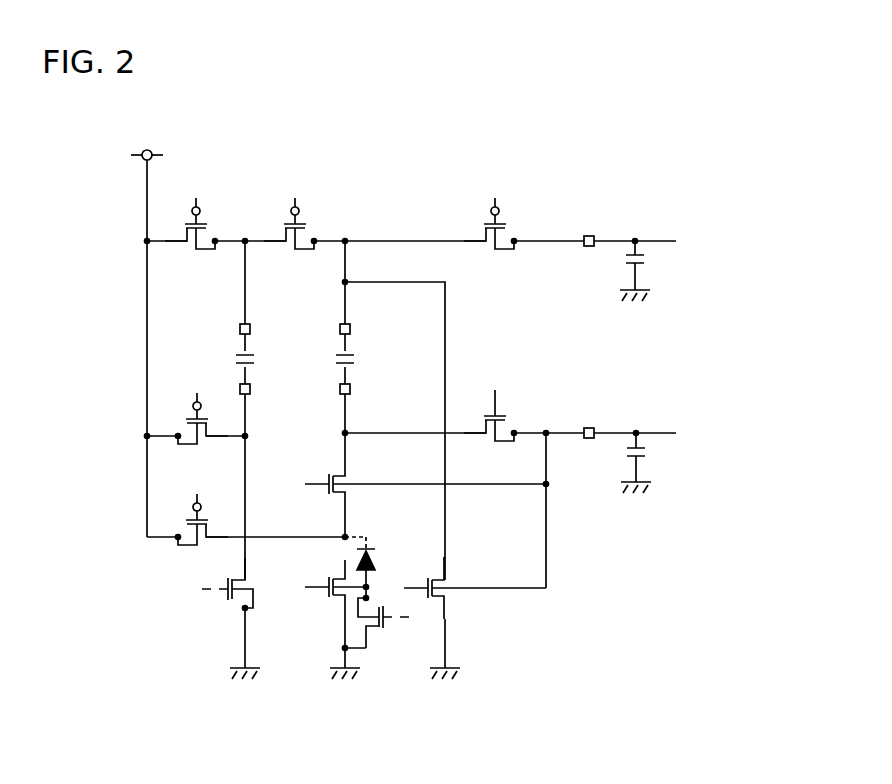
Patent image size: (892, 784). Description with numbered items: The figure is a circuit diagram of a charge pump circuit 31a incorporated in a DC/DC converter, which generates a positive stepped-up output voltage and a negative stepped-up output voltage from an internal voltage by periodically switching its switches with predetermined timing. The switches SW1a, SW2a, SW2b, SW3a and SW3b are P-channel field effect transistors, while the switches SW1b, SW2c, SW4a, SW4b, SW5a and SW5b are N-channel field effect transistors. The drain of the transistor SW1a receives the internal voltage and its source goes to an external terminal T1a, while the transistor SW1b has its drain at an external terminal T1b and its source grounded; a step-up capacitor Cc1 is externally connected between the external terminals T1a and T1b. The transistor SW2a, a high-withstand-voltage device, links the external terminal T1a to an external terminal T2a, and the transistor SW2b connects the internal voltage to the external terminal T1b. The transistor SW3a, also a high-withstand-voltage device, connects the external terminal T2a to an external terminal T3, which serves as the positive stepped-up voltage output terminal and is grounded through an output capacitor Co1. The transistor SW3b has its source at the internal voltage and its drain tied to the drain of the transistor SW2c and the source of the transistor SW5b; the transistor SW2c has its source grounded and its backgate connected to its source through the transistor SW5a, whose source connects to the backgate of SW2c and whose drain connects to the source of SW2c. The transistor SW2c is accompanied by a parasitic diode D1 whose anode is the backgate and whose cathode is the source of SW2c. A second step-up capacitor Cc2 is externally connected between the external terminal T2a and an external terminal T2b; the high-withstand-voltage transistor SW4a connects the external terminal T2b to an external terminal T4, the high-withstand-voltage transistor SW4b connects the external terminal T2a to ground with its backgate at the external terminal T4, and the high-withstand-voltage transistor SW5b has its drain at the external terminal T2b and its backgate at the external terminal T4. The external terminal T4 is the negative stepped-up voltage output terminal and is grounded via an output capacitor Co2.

The charge pump circuit 31a is at (510, 63).
The switch SW1a is at (196, 252).
The switch SW2a is at (295, 252).
The switch SW3a is at (495, 252).
The switch SW2b is at (196, 447).
The switch SW3b is at (177, 546).
The switch SW1b is at (223, 598).
The switch SW2c is at (325, 598).
The switch SW4a is at (495, 446).
The switch SW4b is at (441, 583).
The switch SW5a is at (386, 628).
The switch SW5b is at (328, 474).
The parasitic diode D1 is at (378, 561).
The external terminal T1a is at (251, 329).
The external terminal T1b is at (251, 389).
The external terminal T2a is at (351, 329).
The external terminal T2b is at (351, 389).
The external terminal T3 is at (589, 236).
The external terminal T4 is at (589, 428).
The step-up capacitor Cc1 is at (255, 359).
The step-up capacitor Cc2 is at (355, 359).
The output capacitor Co1 is at (645, 264).
The output capacitor Co2 is at (646, 457).